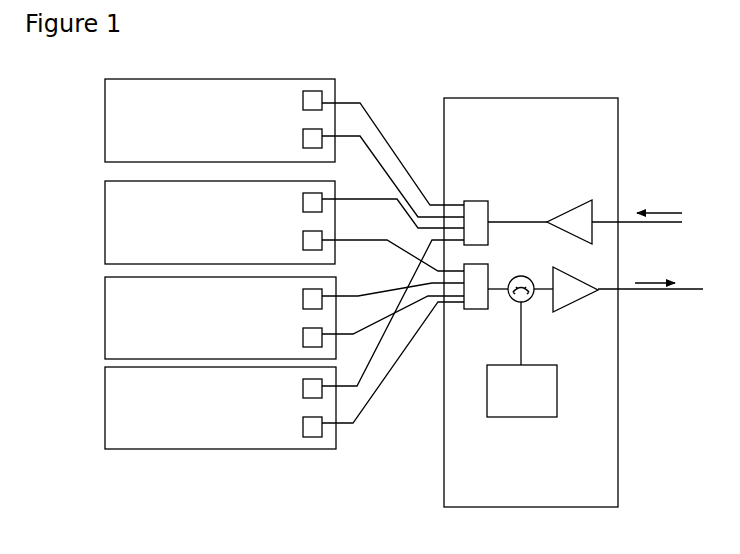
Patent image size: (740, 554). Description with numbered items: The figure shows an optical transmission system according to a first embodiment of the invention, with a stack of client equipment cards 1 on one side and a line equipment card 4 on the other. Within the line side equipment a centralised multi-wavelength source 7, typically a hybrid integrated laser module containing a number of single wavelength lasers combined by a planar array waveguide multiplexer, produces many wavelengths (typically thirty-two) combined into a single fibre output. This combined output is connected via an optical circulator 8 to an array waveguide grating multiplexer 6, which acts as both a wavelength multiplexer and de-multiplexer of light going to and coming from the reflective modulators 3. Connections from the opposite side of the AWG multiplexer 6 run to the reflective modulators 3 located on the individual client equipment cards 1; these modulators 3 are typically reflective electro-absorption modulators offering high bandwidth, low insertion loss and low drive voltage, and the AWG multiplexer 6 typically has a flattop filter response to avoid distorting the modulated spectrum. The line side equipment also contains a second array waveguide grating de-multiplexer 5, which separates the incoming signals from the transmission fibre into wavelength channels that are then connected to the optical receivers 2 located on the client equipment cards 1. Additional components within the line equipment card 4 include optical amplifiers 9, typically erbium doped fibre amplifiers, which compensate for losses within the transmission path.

The client equipment card 1 is at (145, 130).
The optical receiver 2 is at (307, 102).
The reflective modulator 3 is at (312, 138).
The line equipment card 4 is at (526, 114).
The array waveguide grating (AWG) de-multiplexer 5 is at (472, 209).
The array waveguide grating (AWG) multiplexer 6 is at (468, 315).
The multi-wavelength source 7 is at (481, 405).
The optical circulator 8 is at (533, 311).
The optical amplifier 9 is at (580, 246).